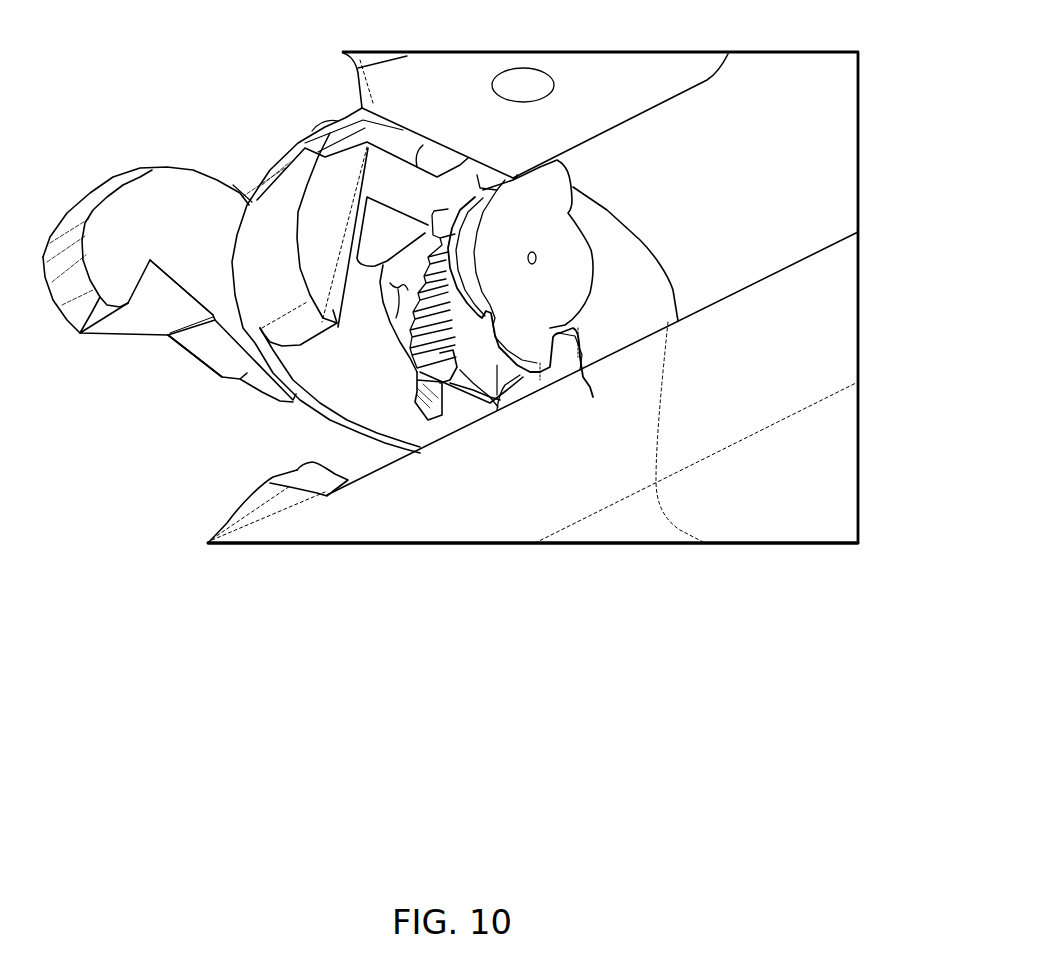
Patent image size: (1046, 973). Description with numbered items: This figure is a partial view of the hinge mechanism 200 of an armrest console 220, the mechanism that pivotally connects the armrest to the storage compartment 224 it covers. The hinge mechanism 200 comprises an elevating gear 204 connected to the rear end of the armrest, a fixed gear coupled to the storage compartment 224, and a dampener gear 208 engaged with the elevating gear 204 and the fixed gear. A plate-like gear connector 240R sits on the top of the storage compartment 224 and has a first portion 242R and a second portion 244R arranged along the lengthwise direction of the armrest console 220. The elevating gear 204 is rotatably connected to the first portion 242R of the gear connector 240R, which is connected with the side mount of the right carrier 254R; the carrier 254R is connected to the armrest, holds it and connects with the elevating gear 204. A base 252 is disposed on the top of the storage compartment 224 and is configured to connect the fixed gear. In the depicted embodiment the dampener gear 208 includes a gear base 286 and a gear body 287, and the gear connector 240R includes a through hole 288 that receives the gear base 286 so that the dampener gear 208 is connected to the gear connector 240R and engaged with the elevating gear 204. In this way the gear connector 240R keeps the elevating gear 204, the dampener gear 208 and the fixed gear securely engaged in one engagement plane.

The hinge mechanism 200 is at (668, 219).
The elevating gear 204 is at (422, 397).
The dampener gear 208 is at (488, 106).
The armrest console 220 is at (886, 88).
The storage compartment 224 is at (530, 521).
The right gear connector 240R is at (326, 437).
The right first portion 242R is at (205, 367).
The right second portion 244R is at (370, 408).
The base 252 is at (217, 527).
The right carrier 254R is at (225, 167).
The gear base 286 is at (590, 366).
The gear body 287 is at (493, 388).
The through hole 288 is at (433, 280).